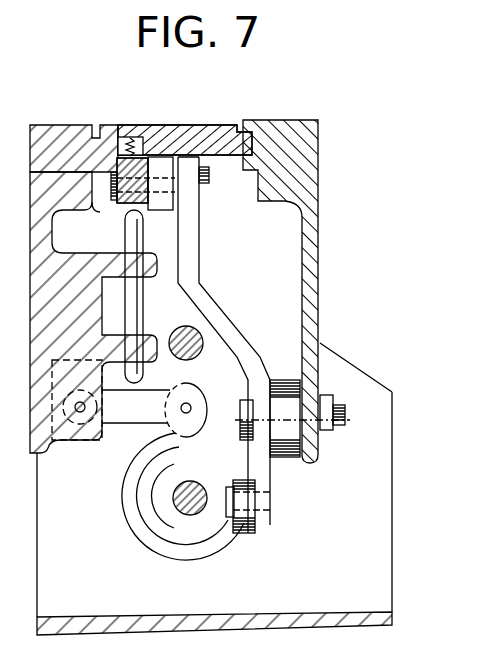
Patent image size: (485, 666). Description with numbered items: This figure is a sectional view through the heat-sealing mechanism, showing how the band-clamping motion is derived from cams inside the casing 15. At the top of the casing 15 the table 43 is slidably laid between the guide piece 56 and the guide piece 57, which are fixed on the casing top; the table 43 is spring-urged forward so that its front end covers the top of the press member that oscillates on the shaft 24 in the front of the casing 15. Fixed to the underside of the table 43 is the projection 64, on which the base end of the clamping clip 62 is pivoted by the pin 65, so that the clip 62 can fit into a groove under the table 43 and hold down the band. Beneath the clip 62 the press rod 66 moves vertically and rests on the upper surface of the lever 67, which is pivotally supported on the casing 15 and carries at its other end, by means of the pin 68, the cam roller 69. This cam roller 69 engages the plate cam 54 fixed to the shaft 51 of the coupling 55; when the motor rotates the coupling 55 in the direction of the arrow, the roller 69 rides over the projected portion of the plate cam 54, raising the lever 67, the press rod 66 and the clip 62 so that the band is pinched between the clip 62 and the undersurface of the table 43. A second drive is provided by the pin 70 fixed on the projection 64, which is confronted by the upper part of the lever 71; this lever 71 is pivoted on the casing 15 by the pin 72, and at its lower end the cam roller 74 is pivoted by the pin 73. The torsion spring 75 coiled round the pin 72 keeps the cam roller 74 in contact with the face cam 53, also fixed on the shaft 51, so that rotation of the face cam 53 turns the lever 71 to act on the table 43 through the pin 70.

The casing 15 is at (372, 543).
The shaft 24 is at (179, 328).
The table 43 is at (202, 132).
The shaft 51 is at (194, 481).
The face cam 53 is at (197, 555).
The plate cam 54 is at (123, 508).
The coupling 55 is at (128, 543).
The guide piece 56 is at (68, 140).
The guide piece 57 is at (275, 138).
The clamping clip 62 is at (140, 170).
The projection 64 is at (168, 210).
The pin 65 is at (111, 190).
The press rod 66 is at (125, 241).
The lever 67 is at (117, 408).
The pin 68 is at (191, 406).
The cam roller 69 is at (193, 390).
The pin 70 is at (206, 184).
The lever 71 is at (237, 338).
The pin 72 is at (283, 407).
The pin 73 is at (228, 502).
The cam roller 74 is at (243, 533).
The torsion spring 75 is at (292, 456).